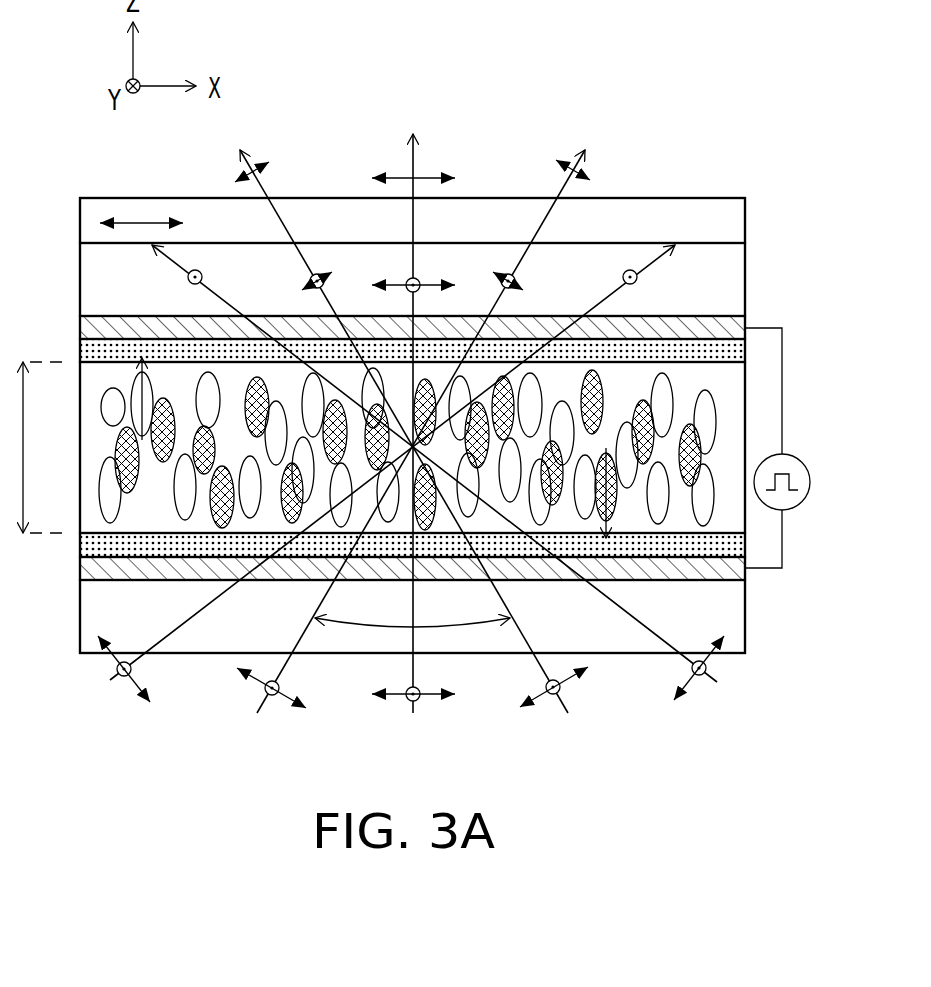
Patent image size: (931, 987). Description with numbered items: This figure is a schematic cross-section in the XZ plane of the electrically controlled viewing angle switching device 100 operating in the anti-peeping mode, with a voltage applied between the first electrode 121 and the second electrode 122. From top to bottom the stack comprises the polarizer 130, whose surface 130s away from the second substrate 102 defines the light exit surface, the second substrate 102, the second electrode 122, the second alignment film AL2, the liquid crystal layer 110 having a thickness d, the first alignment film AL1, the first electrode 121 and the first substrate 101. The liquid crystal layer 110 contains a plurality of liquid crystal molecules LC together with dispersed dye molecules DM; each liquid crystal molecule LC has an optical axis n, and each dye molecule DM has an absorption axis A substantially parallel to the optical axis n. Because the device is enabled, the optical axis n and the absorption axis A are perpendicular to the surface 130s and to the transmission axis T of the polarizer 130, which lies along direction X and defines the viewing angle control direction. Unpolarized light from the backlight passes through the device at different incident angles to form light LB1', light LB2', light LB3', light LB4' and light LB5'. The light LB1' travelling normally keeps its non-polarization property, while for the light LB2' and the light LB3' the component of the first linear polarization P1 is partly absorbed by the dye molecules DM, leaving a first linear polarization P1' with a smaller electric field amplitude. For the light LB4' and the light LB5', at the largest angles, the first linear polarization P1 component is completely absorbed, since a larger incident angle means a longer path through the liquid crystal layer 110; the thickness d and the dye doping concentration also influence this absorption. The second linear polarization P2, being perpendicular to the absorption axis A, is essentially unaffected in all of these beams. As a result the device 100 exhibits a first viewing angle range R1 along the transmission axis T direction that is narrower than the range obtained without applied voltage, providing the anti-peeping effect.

The electrically controlled viewing angle switching device 100 is at (770, 741).
The polarizer 130 is at (738, 222).
The surface of the polarizer 130s is at (695, 196).
The second substrate 102 is at (730, 272).
The second electrode 122 is at (92, 330).
The second alignment film AL2 is at (83, 352).
The liquid crystal layer 110 is at (92, 502).
The first alignment film AL1 is at (83, 545).
The first electrode 121 is at (83, 570).
The first substrate 101 is at (740, 610).
The liquid crystal molecules LC is at (107, 480).
The dye molecules DM is at (120, 455).
The optical axis n is at (135, 370).
The absorption axis A is at (618, 500).
The thickness of the liquid crystal layer d is at (37, 447).
The transmission axis T is at (131, 198).
The first linear polarization P1 is at (329, 436).
The second linear polarization P2 is at (108, 735).
The first linear polarization with less light components P1' is at (390, 192).
The light LB1' is at (441, 399).
The light LB2' is at (404, 409).
The light LB3' is at (421, 431).
The light LB4' is at (410, 463).
The light LB5' is at (394, 409).
The first viewing angle range R1 is at (462, 630).